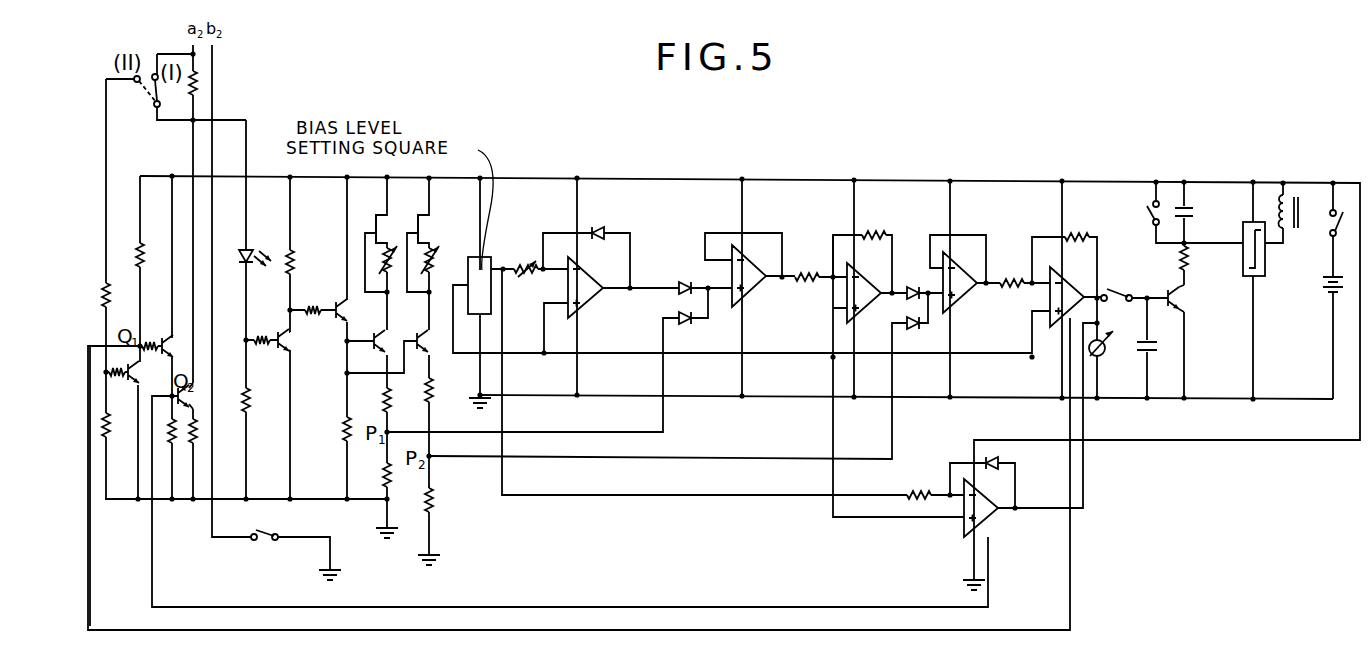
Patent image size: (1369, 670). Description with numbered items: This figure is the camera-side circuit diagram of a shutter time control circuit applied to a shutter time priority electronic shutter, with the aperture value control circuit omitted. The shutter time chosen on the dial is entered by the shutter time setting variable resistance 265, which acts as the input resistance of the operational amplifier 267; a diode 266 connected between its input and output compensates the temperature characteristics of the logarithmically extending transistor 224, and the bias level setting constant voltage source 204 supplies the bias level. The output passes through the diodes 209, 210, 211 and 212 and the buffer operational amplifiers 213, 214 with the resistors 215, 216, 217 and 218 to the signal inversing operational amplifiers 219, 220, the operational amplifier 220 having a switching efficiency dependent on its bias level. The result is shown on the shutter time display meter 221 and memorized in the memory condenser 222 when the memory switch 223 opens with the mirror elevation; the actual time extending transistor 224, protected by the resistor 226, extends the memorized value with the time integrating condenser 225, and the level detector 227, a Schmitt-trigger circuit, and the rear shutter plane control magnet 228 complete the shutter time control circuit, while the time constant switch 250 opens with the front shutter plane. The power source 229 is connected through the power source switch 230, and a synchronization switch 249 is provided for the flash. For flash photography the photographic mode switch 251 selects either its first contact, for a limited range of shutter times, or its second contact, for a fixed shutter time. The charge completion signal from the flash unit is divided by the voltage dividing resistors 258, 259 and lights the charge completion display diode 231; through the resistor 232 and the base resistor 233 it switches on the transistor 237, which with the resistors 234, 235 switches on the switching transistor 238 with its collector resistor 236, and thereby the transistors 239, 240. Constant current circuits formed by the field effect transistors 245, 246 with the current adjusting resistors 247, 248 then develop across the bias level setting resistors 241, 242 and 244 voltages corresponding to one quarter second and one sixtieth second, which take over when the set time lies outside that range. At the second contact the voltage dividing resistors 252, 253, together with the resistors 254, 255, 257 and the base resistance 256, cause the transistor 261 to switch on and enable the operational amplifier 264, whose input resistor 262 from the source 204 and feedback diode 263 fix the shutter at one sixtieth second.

The bias level setting constant voltage source 204 is at (468, 268).
The diode 209 is at (683, 282).
The diode 210 is at (686, 325).
The diode 211 is at (914, 286).
The diode 212 is at (915, 330).
The buffer operational amplifier 213 is at (752, 292).
The buffer operational amplifier 214 is at (963, 294).
The resistor 215 is at (813, 265).
The resistor 216 is at (881, 223).
The resistor 217 is at (1019, 271).
The resistor 218 is at (1086, 225).
The signal inversing operational amplifier 219 is at (846, 295).
The signal inversing operational amplifier 220 is at (1050, 296).
The shutter time display meter 221 is at (1104, 354).
The memory condenser 222 is at (1155, 352).
The memory switch 223 is at (1118, 289).
The actual time extending transistor 224 is at (1182, 302).
The time integrating condenser 225 is at (1208, 215).
The protection resistor 226 is at (1207, 260).
The level detector 227 is at (1265, 270).
The rear shutter plane control magnet 228 is at (1296, 208).
The power source 229 is at (1326, 288).
The power source switch 230 is at (1330, 232).
The charge completion display diode 231 is at (243, 254).
The resistor 232 is at (243, 395).
The base resistor 233 is at (269, 330).
The resistor 234 is at (312, 266).
The resistor 235 is at (316, 299).
The resistor 236 is at (334, 431).
The transistor 237 is at (284, 355).
The switching transistor 238 is at (336, 315).
The transistor 239 is at (376, 348).
The transistor 240 is at (424, 352).
The bias level setting resistor 241 is at (374, 401).
The bias level setting resistor 242 is at (374, 475).
The bias level setting resistor 244 is at (450, 501).
The field effect transistor 245 is at (386, 232).
The field effect transistor 246 is at (428, 236).
The current adjusting resistor 247 is at (385, 280).
The current adjusting resistor 248 is at (428, 280).
The synchronization switch 249 is at (296, 555).
The time constant switch 250 is at (1139, 212).
The photographic mode switch 251 is at (152, 90).
The voltage dividing resistor 252 is at (107, 283).
The voltage dividing resistor 253 is at (108, 436).
The resistor 254 is at (118, 375).
The resistor 255 is at (140, 243).
The base resistance 256 is at (150, 342).
The resistor 257 is at (174, 443).
The voltage dividing resistor 258 is at (198, 428).
The voltage dividing resistor 259 is at (200, 90).
The transistor 261 is at (155, 360).
The input resistor 262 is at (926, 483).
The diode 263 is at (1000, 462).
The operational amplifier 264 is at (964, 530).
The shutter time setting variable resistance 265 is at (527, 260).
The diode 266 is at (602, 230).
The operational amplifier 267 is at (590, 306).